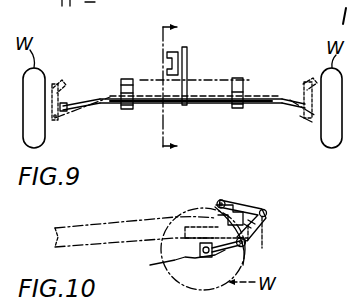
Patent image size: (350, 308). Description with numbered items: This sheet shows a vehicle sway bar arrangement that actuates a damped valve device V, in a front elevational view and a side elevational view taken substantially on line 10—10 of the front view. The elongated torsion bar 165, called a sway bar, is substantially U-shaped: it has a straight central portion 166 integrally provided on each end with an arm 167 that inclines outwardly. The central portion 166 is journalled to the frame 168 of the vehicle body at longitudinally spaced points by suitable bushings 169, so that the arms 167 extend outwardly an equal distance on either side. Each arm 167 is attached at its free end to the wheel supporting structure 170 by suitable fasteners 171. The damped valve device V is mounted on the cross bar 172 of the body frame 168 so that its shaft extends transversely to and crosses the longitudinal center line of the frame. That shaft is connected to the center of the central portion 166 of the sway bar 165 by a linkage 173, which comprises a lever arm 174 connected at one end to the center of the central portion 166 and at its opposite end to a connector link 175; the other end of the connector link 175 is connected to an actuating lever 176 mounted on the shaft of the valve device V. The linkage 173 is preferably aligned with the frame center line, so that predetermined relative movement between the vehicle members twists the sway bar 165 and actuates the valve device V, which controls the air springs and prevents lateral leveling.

In FIG. 9, the section line 10— 10 is at (157, 89).
In FIG. 9, the torsion bar 165 is at (152, 104).
In FIG. 10, the torsion bar 165 is at (238, 258).
In FIG. 9, the central portion 166 is at (197, 104).
In FIG. 9, the arm 167 is at (78, 103).
In FIG. 9, the frame 168 is at (122, 79).
In FIG. 9, the bushings 169 is at (118, 109).
In FIG. 9, the wheel supporting structure 170 is at (300, 119).
In FIG. 9, the fasteners 171 is at (64, 102).
In FIG. 10, the fasteners 171 is at (150, 265).
In FIG. 9, the cross bar 172 is at (143, 80).
In FIG. 9, the linkage 173 is at (188, 60).
In FIG. 10, the linkage 173 is at (265, 207).
In FIG. 10, the lever arm 174 is at (268, 219).
In FIG. 10, the connector link 175 is at (254, 202).
In FIG. 10, the actuating lever 176 is at (224, 200).
In FIG. 9, the damped valve device V is at (171, 51).
In FIG. 10, the damped valve device V is at (216, 206).